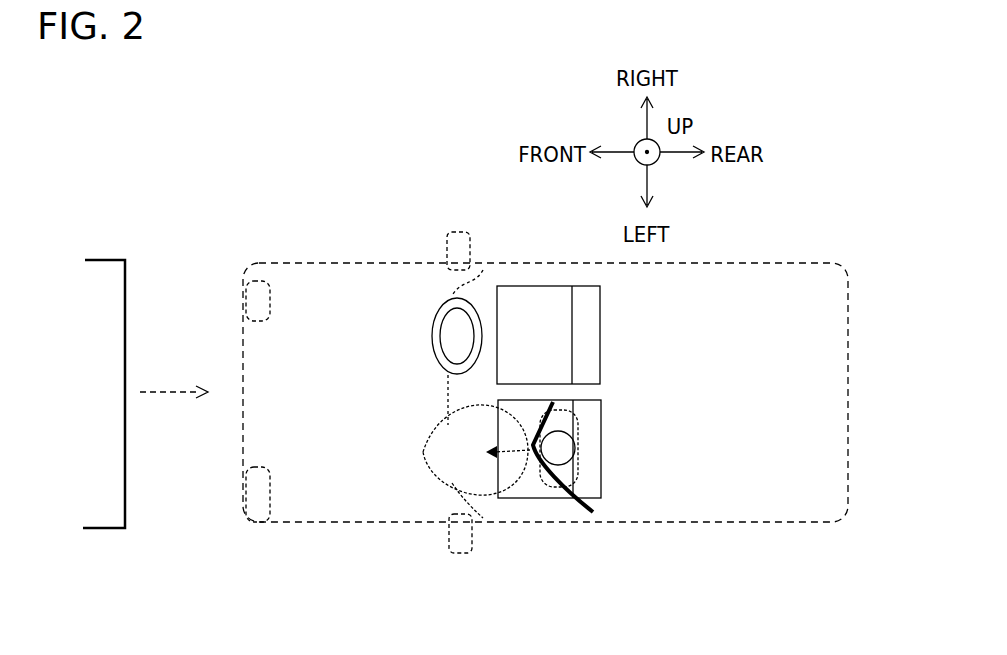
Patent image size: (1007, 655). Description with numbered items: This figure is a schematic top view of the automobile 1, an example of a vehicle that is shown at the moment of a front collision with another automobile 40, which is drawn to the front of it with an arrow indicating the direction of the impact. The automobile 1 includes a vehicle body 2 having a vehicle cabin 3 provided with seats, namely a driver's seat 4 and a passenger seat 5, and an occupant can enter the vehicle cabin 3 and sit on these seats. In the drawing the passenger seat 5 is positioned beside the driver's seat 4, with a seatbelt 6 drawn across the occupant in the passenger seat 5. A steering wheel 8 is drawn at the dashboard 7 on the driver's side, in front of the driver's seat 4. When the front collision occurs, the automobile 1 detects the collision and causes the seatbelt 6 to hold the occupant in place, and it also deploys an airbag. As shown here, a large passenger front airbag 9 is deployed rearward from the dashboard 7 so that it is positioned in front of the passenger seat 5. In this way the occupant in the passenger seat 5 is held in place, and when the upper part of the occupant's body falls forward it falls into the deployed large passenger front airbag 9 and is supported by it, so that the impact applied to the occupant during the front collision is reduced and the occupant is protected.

The automobile 1 is at (387, 242).
The vehicle body 2 is at (290, 263).
The vehicle cabin 3 is at (730, 305).
The driver's seat 4 is at (600, 337).
The passenger seat 5 is at (602, 452).
The seatbelt 6 is at (592, 515).
The dashboard 7 is at (447, 388).
The steering wheel 8 is at (475, 307).
The large passenger front airbag 9 is at (478, 478).
The another automobile 40 is at (107, 258).